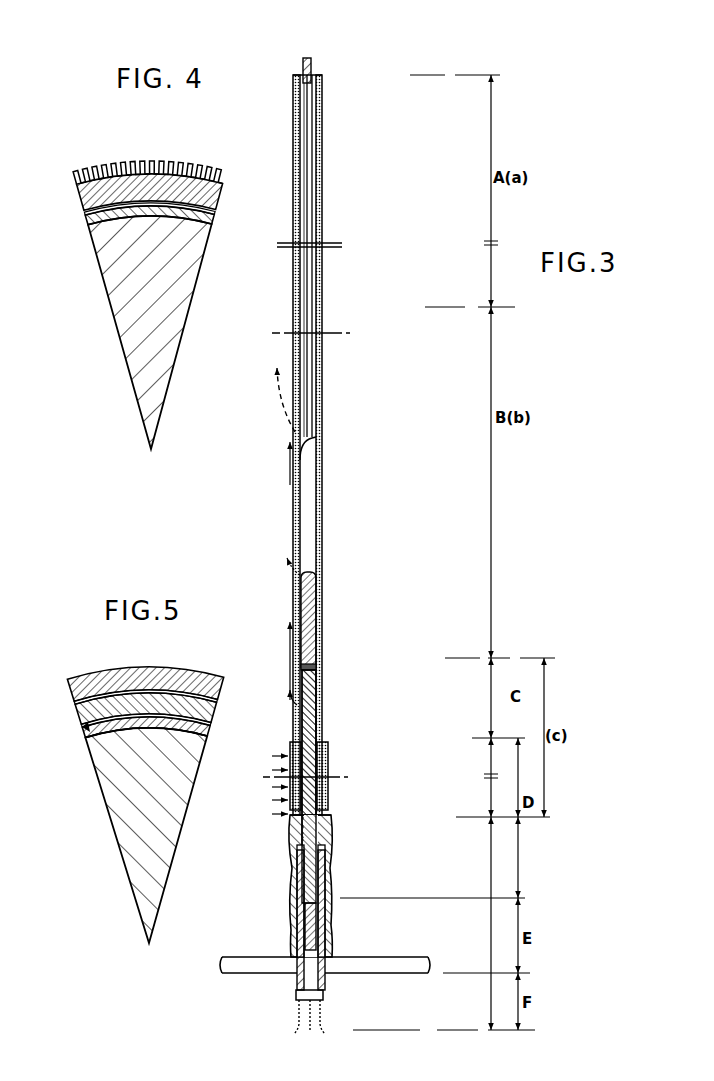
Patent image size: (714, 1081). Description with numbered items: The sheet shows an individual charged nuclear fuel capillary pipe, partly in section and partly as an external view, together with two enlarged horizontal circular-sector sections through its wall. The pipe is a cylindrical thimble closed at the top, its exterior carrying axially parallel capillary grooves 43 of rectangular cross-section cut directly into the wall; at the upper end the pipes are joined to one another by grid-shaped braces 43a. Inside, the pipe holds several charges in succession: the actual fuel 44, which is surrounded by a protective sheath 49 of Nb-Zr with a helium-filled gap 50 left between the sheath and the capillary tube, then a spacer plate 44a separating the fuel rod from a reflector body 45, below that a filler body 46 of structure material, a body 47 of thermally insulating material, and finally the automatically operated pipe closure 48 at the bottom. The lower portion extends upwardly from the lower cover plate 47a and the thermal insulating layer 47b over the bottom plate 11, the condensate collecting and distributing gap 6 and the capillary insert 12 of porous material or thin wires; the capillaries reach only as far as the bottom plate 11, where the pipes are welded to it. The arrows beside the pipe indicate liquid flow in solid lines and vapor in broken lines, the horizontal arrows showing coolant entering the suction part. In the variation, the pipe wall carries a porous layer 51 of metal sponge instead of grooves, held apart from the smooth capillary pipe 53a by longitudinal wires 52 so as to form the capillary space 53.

In FIG. 4, the capillary grooves 43 is at (176, 168).
In FIG. 3, the grid-shaped braces 43a is at (420, 63).
In FIG. 4, the fuel 44 is at (112, 316).
In FIG. 5, the fuel 44 is at (108, 781).
In FIG. 3, the fuel 44 is at (313, 588).
In FIG. 3, the spacer plate 44a is at (312, 667).
In FIG. 3, the reflector body 45 is at (302, 720).
In FIG. 3, the filler body 46 is at (302, 852).
In FIG. 3, the thermally insulating body 47 is at (297, 942).
In FIG. 3, the lower cover plate 47a is at (387, 965).
In FIG. 3, the thermal insulating layer 47b is at (330, 935).
In FIG. 3, the automatically operated pipe closure 48 is at (296, 996).
In FIG. 4, the protective sheath 49 is at (92, 228).
In FIG. 5, the protective sheath 49 is at (88, 733).
In FIG. 3, the protective sheath 49 is at (314, 543).
In FIG. 4, the gap 50 is at (86, 216).
In FIG. 5, the porous layer 51 is at (222, 682).
In FIG. 5, the longitudinal wires 52 is at (150, 687).
In FIG. 5, the capillary space 53 is at (213, 707).
In FIG. 5, the smooth capillary pipe 53a is at (82, 722).
In FIG. 3, the condensate collecting and distributing gap 6 is at (292, 818).
In FIG. 3, the bottom plate 11 is at (293, 887).
In FIG. 3, the capillary insert 12 is at (290, 748).